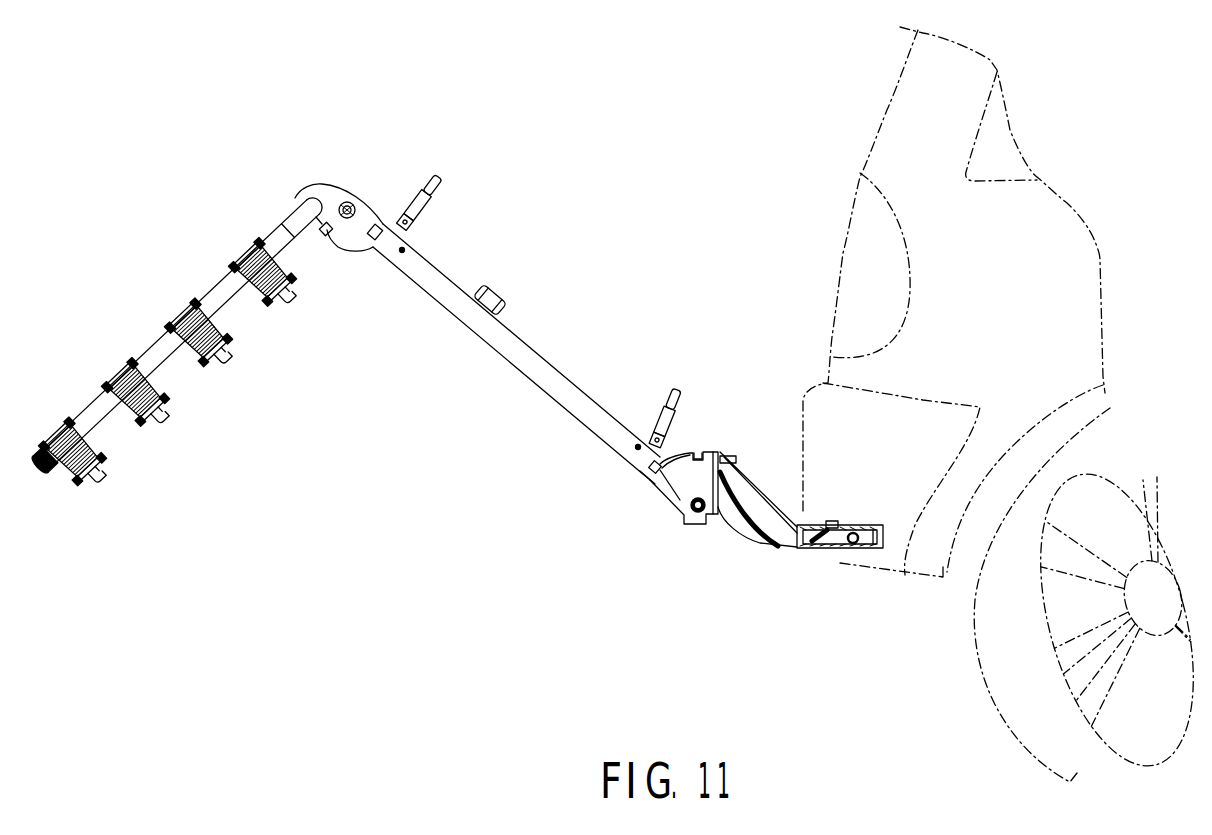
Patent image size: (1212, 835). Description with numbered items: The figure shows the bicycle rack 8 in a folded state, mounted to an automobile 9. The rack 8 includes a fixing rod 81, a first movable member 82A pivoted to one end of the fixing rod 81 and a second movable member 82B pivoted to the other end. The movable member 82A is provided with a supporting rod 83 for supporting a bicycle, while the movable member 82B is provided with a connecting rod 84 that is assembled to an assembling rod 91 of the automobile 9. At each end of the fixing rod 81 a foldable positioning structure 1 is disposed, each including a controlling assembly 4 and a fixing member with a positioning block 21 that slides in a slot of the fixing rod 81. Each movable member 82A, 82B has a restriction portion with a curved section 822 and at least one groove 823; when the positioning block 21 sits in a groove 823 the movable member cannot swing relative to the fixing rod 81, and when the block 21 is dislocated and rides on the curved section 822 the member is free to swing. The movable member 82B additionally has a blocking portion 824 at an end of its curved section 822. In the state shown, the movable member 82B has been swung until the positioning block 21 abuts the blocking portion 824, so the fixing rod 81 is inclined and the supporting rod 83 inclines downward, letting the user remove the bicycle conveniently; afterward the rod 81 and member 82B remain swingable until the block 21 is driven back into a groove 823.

The foldable positioning structure 1 is at (337, 179).
The controlling assembly 4 is at (438, 180).
The bicycle rack 8 is at (487, 377).
The automobile 9 is at (892, 570).
The positioning block 21 is at (381, 241).
The fixing rod 81 is at (572, 407).
The movable member 82A is at (312, 190).
The movable member 82B is at (668, 488).
The supporting rod 83 is at (163, 357).
The connecting rod 84 is at (766, 542).
The assembling rod 91 is at (852, 545).
The curved section 822 is at (680, 452).
The groove 823 is at (327, 232).
The blocking portion 824 is at (648, 477).